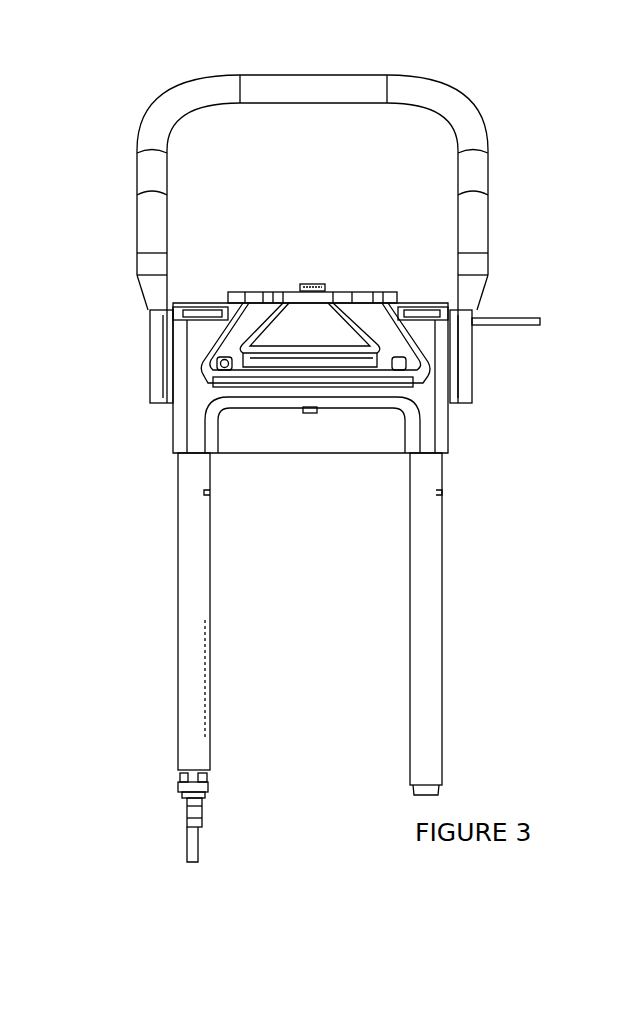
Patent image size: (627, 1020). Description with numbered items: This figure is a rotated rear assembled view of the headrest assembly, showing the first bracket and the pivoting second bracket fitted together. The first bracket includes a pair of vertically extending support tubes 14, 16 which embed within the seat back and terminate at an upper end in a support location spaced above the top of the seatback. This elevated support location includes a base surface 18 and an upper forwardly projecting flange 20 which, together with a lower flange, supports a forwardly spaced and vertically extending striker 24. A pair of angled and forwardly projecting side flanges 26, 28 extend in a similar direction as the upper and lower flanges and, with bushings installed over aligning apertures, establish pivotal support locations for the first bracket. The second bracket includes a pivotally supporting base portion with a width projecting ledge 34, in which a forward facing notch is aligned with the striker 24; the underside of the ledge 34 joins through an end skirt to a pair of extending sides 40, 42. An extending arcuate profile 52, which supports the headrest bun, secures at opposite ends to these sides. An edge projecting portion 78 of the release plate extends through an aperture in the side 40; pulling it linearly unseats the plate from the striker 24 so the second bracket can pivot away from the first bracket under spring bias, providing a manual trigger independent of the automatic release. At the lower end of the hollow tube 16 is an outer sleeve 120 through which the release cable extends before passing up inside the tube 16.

The arcuate profile 52 is at (163, 102).
The extending side 42 is at (150, 357).
The extending side 40 is at (457, 388).
The edge projecting portion 78 is at (518, 318).
The width projecting ledge 34 is at (198, 304).
The side flange 26 is at (173, 440).
The side flange 28 is at (450, 443).
The base surface 18 is at (287, 325).
The upper flange 20 is at (347, 292).
The striker 24 is at (310, 413).
The support tube 16 is at (178, 603).
The support tube 14 is at (410, 620).
The outer sleeve 120 is at (187, 835).